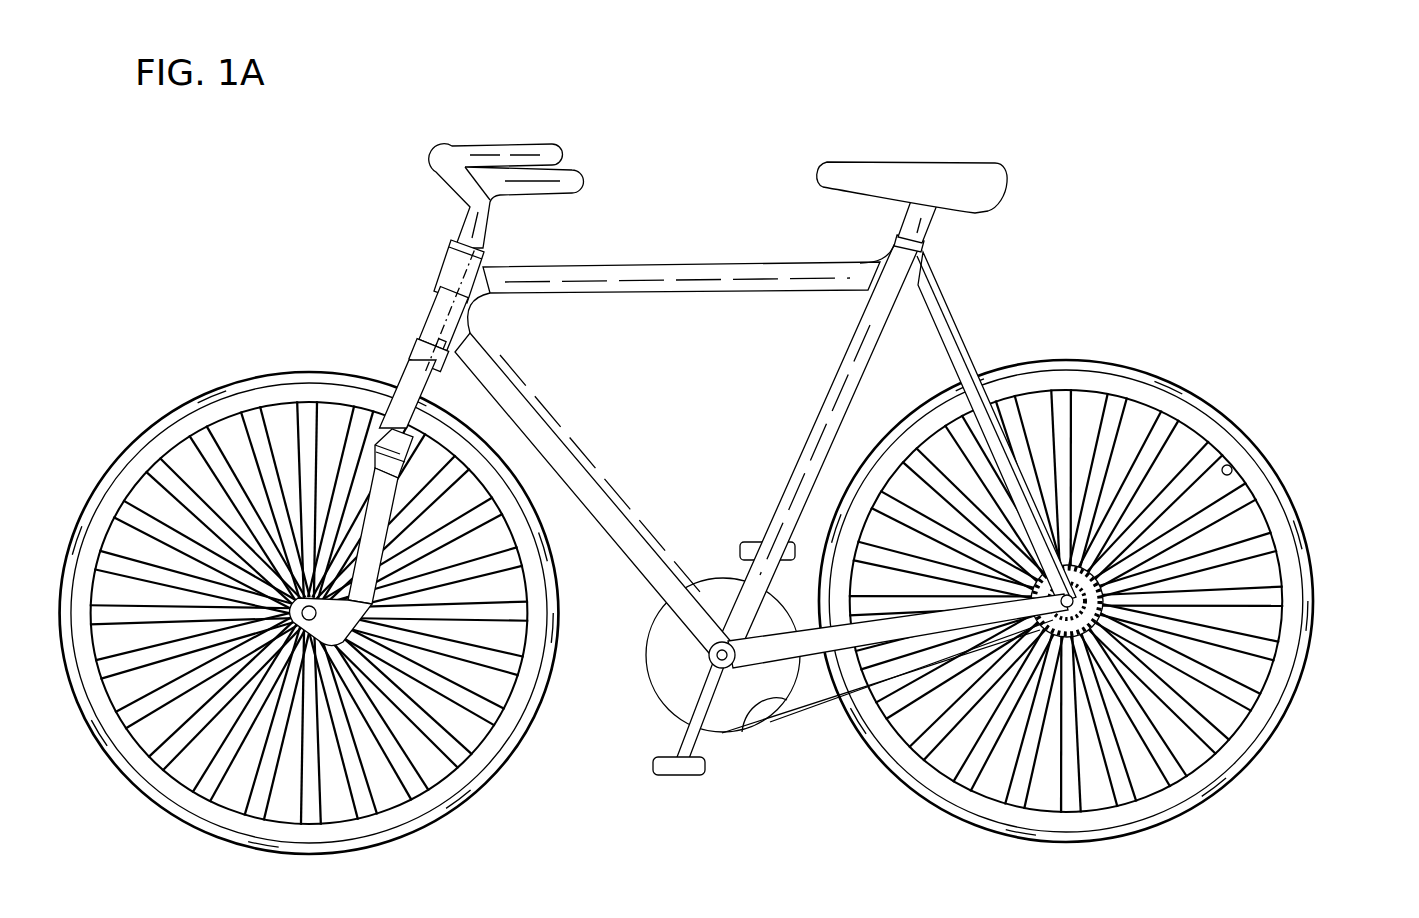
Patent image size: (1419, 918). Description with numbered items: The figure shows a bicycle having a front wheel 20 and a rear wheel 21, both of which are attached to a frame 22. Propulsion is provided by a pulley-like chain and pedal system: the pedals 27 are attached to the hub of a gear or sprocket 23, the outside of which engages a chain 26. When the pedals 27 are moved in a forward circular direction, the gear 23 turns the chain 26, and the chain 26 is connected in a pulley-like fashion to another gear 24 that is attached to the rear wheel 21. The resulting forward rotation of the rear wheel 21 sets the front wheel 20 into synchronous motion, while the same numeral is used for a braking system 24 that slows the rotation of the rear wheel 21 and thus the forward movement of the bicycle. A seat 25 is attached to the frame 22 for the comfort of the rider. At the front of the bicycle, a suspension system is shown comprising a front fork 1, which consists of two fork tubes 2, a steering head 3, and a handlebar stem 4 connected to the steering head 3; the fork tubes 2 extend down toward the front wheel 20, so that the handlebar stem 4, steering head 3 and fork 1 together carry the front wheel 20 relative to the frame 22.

The front fork 1 is at (367, 416).
The fork tubes 2 is at (380, 455).
The steering head 3 is at (418, 348).
The handlebar stem 4 is at (452, 272).
The front wheel 20 is at (172, 428).
The rear wheel 21 is at (1222, 462).
The frame 22 is at (678, 262).
The gear or sprocket 23 is at (748, 722).
The gear 24 is at (1205, 572).
The seat 25 is at (978, 178).
The chain 26 is at (832, 706).
The pedals 27 is at (662, 772).